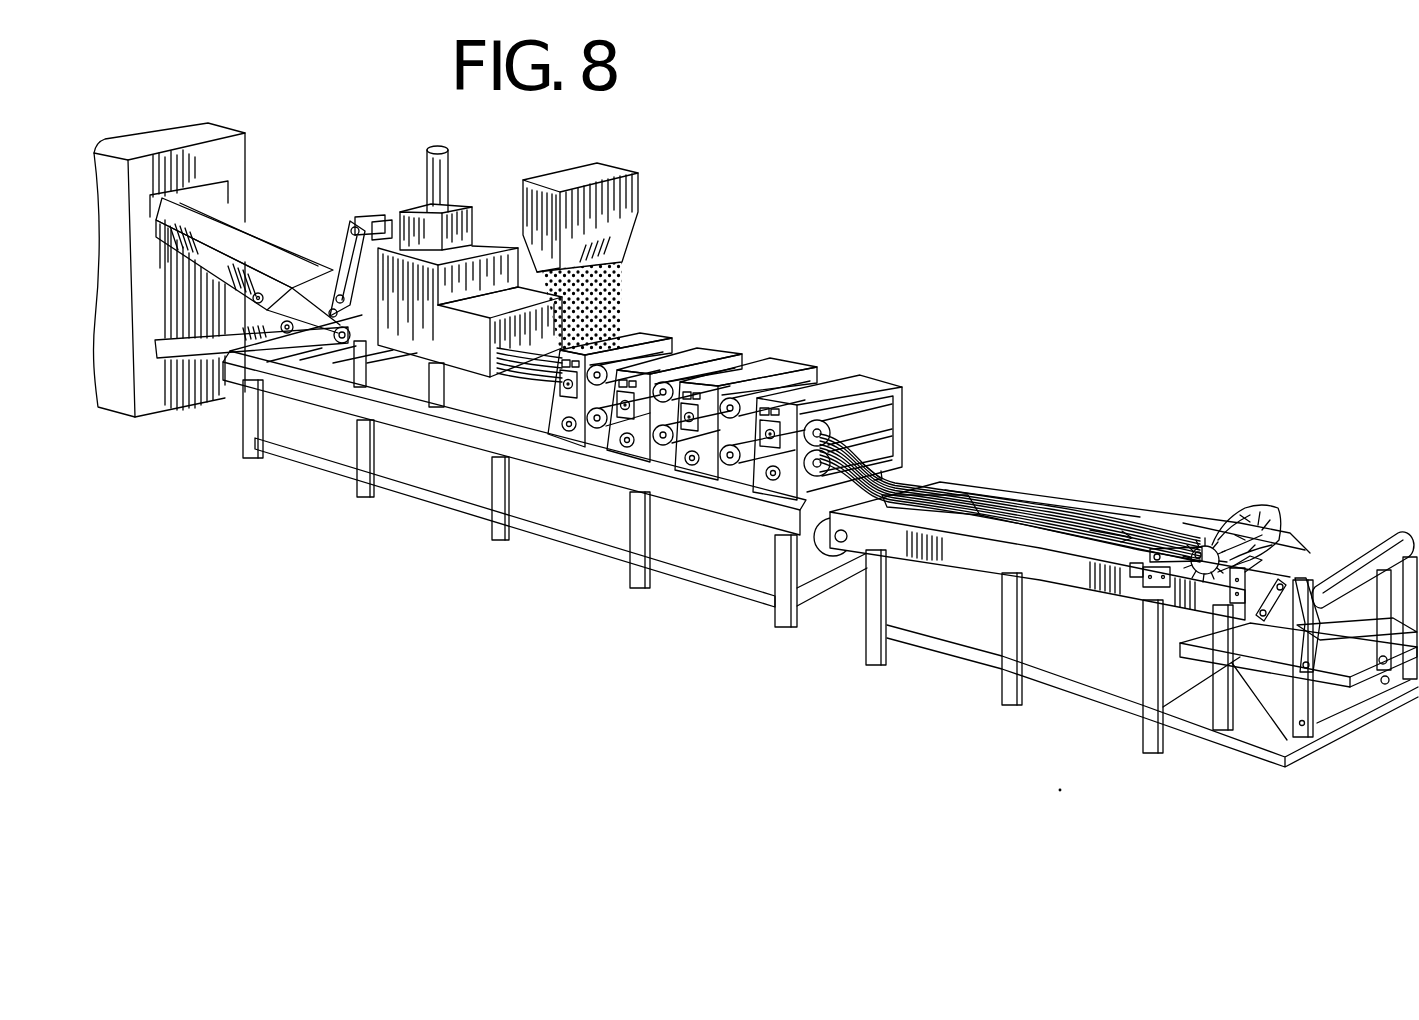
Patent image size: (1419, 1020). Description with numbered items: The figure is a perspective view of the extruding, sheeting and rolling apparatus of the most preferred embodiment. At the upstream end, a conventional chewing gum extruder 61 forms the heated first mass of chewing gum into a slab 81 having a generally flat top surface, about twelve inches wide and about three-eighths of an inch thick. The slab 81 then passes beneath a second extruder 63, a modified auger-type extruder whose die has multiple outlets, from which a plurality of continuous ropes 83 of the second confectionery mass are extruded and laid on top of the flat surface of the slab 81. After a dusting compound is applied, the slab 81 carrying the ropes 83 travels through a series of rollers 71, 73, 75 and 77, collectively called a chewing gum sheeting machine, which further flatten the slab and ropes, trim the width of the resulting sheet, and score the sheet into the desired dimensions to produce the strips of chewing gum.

The chewing gum extruder 61 is at (203, 170).
The slab 81 is at (253, 240).
The ropes 83 is at (337, 275).
The second extruder 63 is at (487, 228).
The roller 71 is at (648, 333).
The roller 73 is at (725, 347).
The roller 75 is at (797, 360).
The roller 77 is at (873, 383).